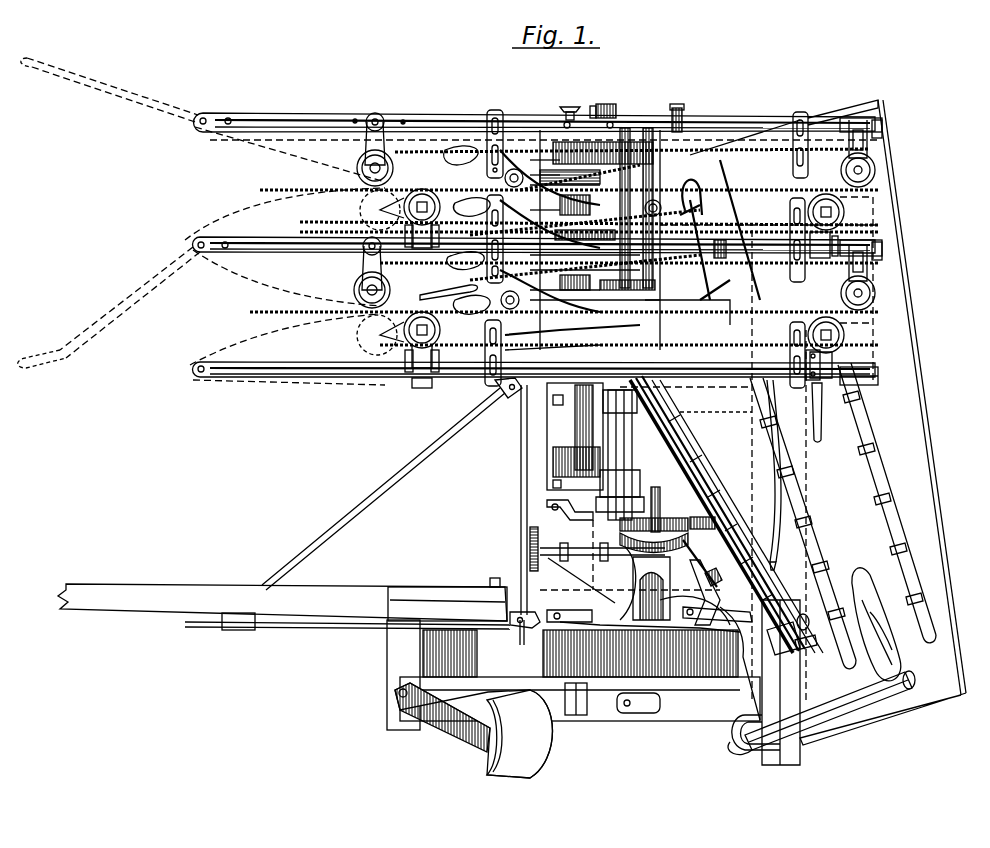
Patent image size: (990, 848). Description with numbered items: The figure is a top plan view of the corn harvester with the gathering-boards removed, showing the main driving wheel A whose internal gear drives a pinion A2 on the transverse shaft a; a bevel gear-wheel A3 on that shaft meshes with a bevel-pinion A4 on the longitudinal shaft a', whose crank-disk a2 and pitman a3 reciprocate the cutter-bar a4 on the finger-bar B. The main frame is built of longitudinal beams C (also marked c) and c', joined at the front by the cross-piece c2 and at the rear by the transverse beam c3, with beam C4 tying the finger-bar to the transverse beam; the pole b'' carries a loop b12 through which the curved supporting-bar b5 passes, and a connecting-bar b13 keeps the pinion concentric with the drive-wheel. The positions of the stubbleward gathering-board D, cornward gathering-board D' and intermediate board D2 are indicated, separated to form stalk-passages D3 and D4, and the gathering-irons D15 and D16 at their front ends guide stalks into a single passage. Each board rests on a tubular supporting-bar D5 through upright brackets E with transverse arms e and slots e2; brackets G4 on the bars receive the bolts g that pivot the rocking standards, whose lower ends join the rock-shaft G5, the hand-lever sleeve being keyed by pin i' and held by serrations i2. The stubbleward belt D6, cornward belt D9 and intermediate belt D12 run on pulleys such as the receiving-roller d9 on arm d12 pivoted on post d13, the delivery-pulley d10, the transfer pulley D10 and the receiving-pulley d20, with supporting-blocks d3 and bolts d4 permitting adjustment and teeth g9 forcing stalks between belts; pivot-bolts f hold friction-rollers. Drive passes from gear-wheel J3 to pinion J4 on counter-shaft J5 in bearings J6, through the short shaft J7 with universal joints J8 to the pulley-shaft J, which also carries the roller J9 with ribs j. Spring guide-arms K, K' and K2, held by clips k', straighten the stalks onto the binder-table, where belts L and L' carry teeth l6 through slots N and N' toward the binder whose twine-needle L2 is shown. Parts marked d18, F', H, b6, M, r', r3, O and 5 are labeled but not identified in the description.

The cornward gathering-board D' is at (537, 137).
The gathering-iron D16 is at (140, 78).
The stalk-passage D4 is at (318, 193).
The intermediate gathering-board D2 is at (320, 220).
The gathering-iron D15 is at (120, 292).
The tubular supporting-bar D5 is at (320, 270).
The stalk-passage D3 is at (328, 320).
The stubbleward gathering-board D is at (532, 349).
The intermediate or transfer pulley D10 is at (618, 142).
The cornward gathering-belt D9 is at (720, 177).
The intermediate endless belt D12 is at (750, 222).
The stubbleward gathering-belt D6 is at (724, 330).
The post d13 is at (376, 112).
The pin d18 is at (405, 120).
The arm d12 is at (392, 145).
The receiving-roller d9 is at (356, 168).
The receiving-pulley d20 is at (362, 260).
The sprockets or teeth g9 is at (404, 207).
The slots e2 is at (810, 178).
The delivery-pulley d10 is at (878, 171).
The pulley F' is at (555, 234).
The upright bracket E is at (496, 118).
The transverse arm e is at (790, 292).
The bolt g is at (596, 108).
The clip k' is at (755, 265).
The spring guide-arm K2 is at (730, 186).
The beam C4 is at (595, 239).
The roller J9 is at (680, 277).
The longitudinal ribs j is at (703, 230).
The pivot-bolt f is at (680, 300).
The cutter-bar a4 is at (670, 363).
The finger-bar B is at (428, 294).
The main frame H is at (952, 390).
The crank-disk a2 is at (860, 352).
The bolt d4 is at (418, 388).
The supporting-block d3 is at (430, 386).
The pitman a3 is at (520, 484).
The pole b'' is at (282, 599).
The loop b12 is at (240, 630).
The cross-piece c2 is at (403, 675).
The main driving or master wheel A is at (584, 665).
The pinion A2 is at (612, 684).
The longitudinal beam c is at (500, 730).
The supporting-bar b5 is at (510, 624).
The connecting-bar b13 is at (665, 628).
The bar b6 is at (740, 663).
The transverse beam c3 is at (762, 690).
The longitudinal beam c' is at (523, 609).
The transverse rock-shaft G5 is at (575, 435).
The bracket G4 is at (532, 452).
The longitudinal beam C is at (620, 455).
The radial notches or serrations i2 is at (598, 462).
The pin i' is at (619, 467).
The short shaft J7 is at (615, 492).
The transverse shaft a is at (660, 507).
The pinion J4 is at (640, 518).
The gear-wheel J3 is at (691, 512).
The universal joint J8 is at (560, 500).
The transverse shaft J is at (660, 395).
The bearing J6 is at (570, 513).
The longitudinal shaft a' is at (602, 573).
The bevel-pinion A4 is at (645, 583).
The bevel gear-wheel A3 is at (695, 592).
The link M is at (717, 578).
The counter-shaft J5 is at (643, 612).
The rail r' is at (726, 515).
The spring guide-arm K' is at (743, 497).
The spring guide-arm K is at (769, 475).
The endless belt L is at (803, 523).
The longitudinal slot N is at (825, 551).
The rail end r3 is at (775, 600).
The longitudinal slot N' is at (887, 503).
The endless belt L' is at (902, 501).
The teeth or sprockets l6 is at (873, 579).
The oscillating twine-needle L2 is at (870, 682).
The pin O is at (804, 617).
The pin 5 is at (811, 636).